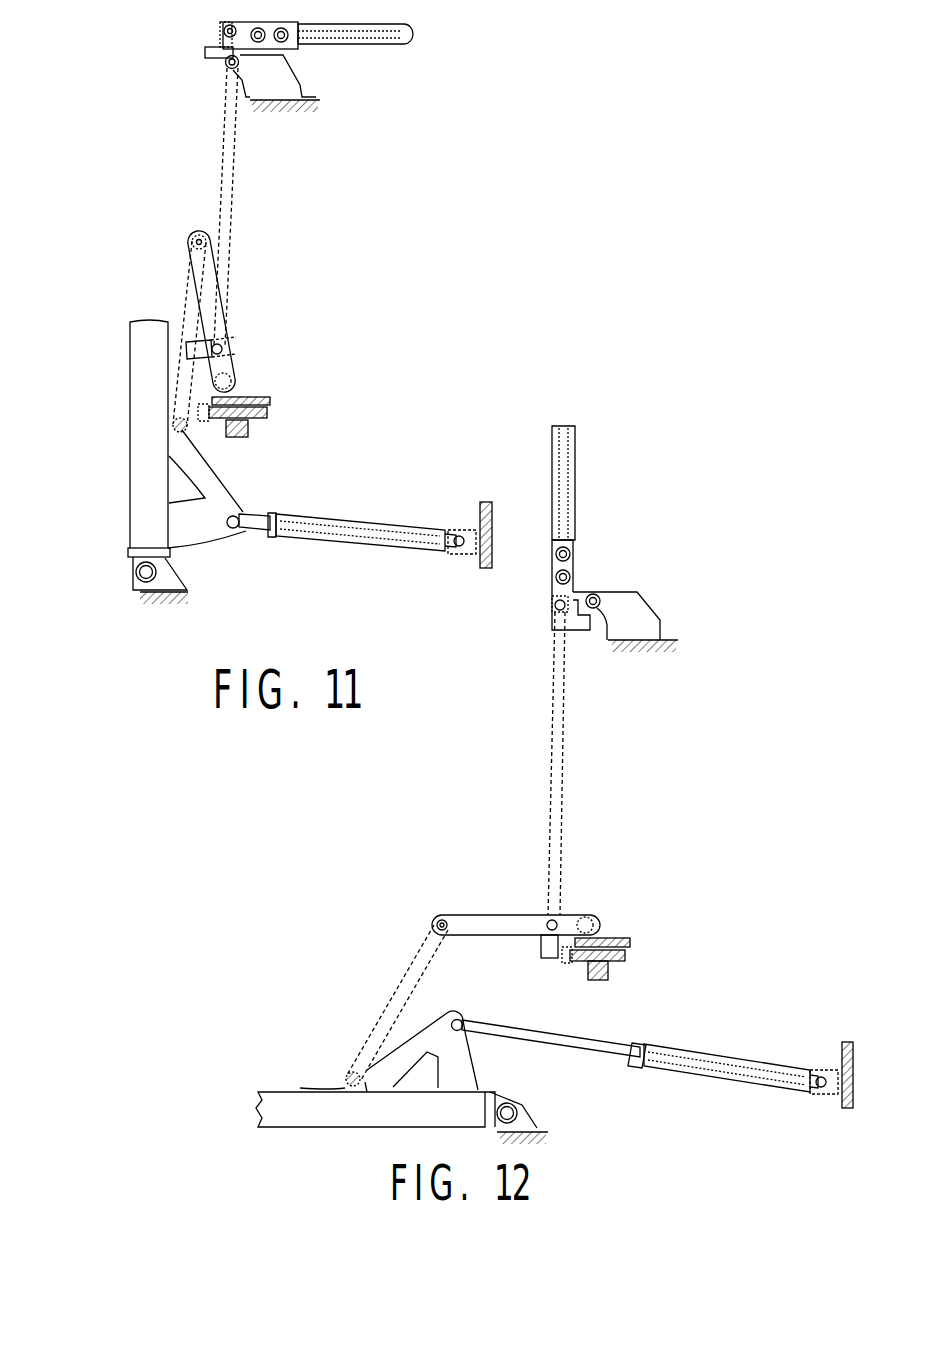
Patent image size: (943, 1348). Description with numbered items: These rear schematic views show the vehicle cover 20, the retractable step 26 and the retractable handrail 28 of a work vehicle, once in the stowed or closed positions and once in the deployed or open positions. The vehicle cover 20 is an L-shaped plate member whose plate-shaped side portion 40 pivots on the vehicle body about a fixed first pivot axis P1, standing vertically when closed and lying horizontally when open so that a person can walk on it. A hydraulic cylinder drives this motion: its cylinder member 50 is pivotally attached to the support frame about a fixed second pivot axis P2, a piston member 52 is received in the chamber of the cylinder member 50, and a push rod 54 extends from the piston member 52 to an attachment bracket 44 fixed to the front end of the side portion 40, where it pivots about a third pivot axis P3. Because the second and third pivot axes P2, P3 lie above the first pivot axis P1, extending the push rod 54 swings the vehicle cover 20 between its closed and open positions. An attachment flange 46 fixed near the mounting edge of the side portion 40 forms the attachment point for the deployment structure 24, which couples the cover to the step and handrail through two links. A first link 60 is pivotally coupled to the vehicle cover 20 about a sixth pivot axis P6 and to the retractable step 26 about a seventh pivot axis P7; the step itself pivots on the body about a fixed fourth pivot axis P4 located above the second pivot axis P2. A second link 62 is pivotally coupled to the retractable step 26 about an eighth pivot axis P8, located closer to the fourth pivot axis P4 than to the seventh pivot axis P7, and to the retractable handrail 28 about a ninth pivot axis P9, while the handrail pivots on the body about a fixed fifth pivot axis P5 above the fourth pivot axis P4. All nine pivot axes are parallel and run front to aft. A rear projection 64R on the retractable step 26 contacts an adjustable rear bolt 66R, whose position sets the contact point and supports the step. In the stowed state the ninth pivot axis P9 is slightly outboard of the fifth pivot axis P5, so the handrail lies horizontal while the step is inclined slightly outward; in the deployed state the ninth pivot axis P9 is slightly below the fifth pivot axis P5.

In FIG. 11, the vehicle cover 20 is at (131, 354).
In FIG. 12, the vehicle cover 20 is at (319, 1131).
In FIG. 11, the deployment structure 24 is at (378, 234).
In FIG. 12, the deployment structure 24 is at (356, 866).
In FIG. 11, the retractable step 26 is at (215, 258).
In FIG. 12, the retractable step 26 is at (457, 915).
In FIG. 11, the retractable handrail 28 is at (361, 47).
In FIG. 12, the retractable handrail 28 is at (578, 462).
In FIG. 11, the side portion 40 is at (128, 510).
In FIG. 12, the side portion 40 is at (265, 1111).
In FIG. 11, the attachment bracket 44 is at (212, 534).
In FIG. 12, the attachment bracket 44 is at (400, 1062).
In FIG. 11, the attachment flange 46 is at (168, 447).
In FIG. 12, the attachment flange 46 is at (345, 1088).
In FIG. 11, the cylinder member 50 is at (378, 556).
In FIG. 12, the cylinder member 50 is at (706, 1058).
In FIG. 11, the piston member 52 is at (326, 522).
In FIG. 12, the piston member 52 is at (640, 1044).
In FIG. 11, the push rod 54 is at (252, 516).
In FIG. 12, the push rod 54 is at (540, 1048).
In FIG. 11, the first link 60 is at (190, 275).
In FIG. 12, the first link 60 is at (398, 1000).
In FIG. 11, the second link 62 is at (220, 152).
In FIG. 12, the second link 62 is at (552, 785).
In FIG. 11, the rear projection 64R is at (188, 342).
In FIG. 12, the rear projection 64R is at (540, 945).
In FIG. 11, the rear bolt 66R is at (272, 412).
In FIG. 12, the rear bolt 66R is at (562, 962).
In FIG. 11, the first pivot axis P1 is at (147, 592).
In FIG. 12, the first pivot axis P1 is at (520, 1110).
In FIG. 11, the second pivot axis P2 is at (460, 535).
In FIG. 12, the second pivot axis P2 is at (822, 1077).
In FIG. 11, the third pivot axis P3 is at (240, 530).
In FIG. 12, the third pivot axis P3 is at (463, 1024).
In FIG. 11, the fourth pivot axis P4 is at (232, 384).
In FIG. 12, the fourth pivot axis P4 is at (600, 922).
In FIG. 11, the fifth pivot axis P5 is at (226, 62).
In FIG. 12, the fifth pivot axis P5 is at (600, 600).
In FIG. 11, the sixth pivot axis P6 is at (173, 424).
In FIG. 12, the sixth pivot axis P6 is at (345, 1078).
In FIG. 11, the seventh pivot axis P7 is at (195, 236).
In FIG. 12, the seventh pivot axis P7 is at (436, 922).
In FIG. 11, the eighth pivot axis P8 is at (222, 350).
In FIG. 12, the eighth pivot axis P8 is at (556, 918).
In FIG. 11, the ninth pivot axis P9 is at (222, 30).
In FIG. 12, the ninth pivot axis P9 is at (556, 610).